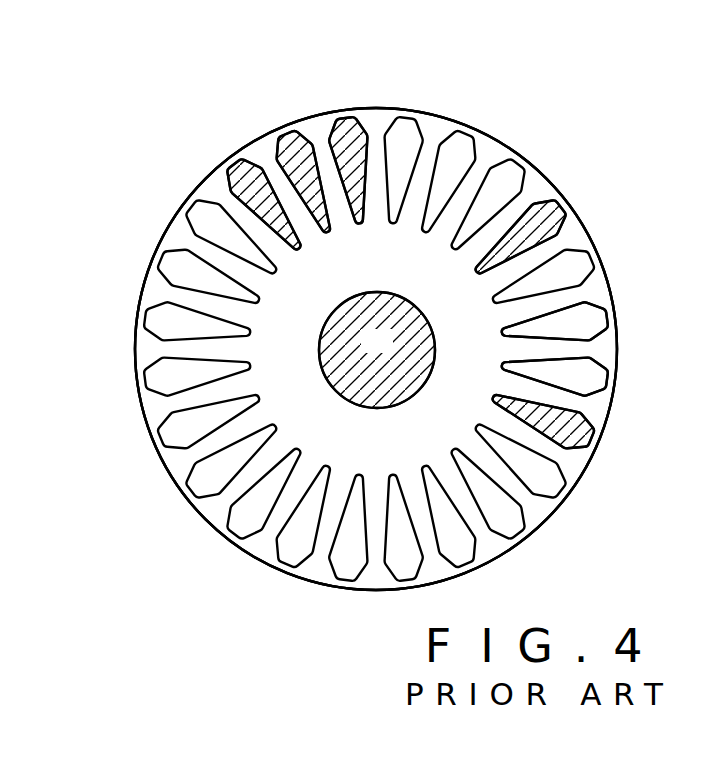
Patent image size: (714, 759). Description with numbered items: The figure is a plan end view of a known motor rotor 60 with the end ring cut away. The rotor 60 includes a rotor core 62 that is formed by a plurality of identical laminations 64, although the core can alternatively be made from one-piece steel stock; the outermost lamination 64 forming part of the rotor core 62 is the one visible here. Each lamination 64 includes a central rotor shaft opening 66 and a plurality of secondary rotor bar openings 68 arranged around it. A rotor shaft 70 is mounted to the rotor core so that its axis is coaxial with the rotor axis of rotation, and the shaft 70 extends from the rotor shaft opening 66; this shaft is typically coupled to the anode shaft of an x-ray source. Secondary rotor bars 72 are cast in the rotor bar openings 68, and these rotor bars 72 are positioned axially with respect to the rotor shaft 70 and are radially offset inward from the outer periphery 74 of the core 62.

The motor rotor 60 is at (353, 90).
The rotor core 62 is at (130, 353).
The lamination 64 is at (465, 342).
The rotor shaft opening 66 is at (405, 400).
The secondary rotor bar opening 68 is at (510, 180).
The rotor shaft 70 is at (377, 350).
The secondary rotor bar 72 is at (545, 217).
The outer periphery 74 is at (618, 350).